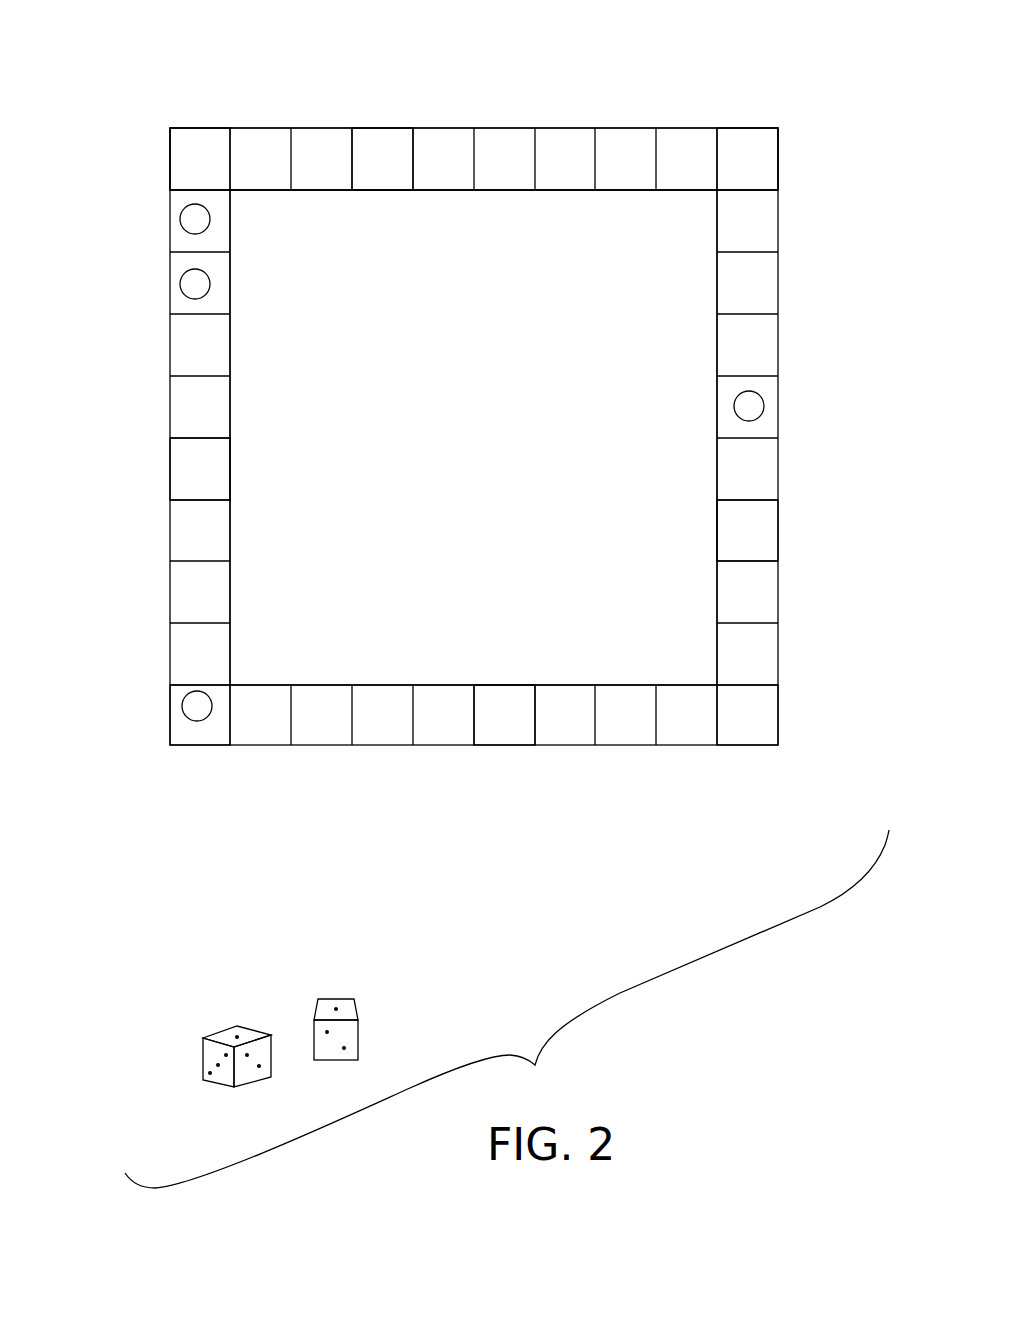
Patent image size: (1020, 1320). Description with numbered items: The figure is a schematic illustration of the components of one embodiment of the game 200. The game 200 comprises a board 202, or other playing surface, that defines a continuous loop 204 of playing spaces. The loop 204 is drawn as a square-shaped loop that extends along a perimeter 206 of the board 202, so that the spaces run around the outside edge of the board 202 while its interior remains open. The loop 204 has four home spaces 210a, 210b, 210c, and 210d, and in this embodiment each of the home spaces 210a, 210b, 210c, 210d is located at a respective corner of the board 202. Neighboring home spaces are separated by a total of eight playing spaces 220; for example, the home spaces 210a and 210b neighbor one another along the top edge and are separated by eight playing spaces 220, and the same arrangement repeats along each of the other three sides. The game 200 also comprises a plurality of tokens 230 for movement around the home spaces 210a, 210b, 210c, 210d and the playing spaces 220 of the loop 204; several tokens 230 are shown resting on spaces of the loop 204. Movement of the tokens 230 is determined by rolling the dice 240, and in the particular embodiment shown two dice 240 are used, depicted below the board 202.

The game 200 is at (832, 112).
The board 202 is at (497, 444).
The continuous loop 204 is at (515, 128).
The perimeter 206 is at (474, 115).
The home space 210a is at (201, 150).
The home space 210b is at (752, 150).
The home space 210c is at (755, 713).
The home space 210d is at (200, 732).
The playing spaces 220 is at (387, 150).
The tokens 230 is at (193, 285).
The dice 240 is at (192, 1010).